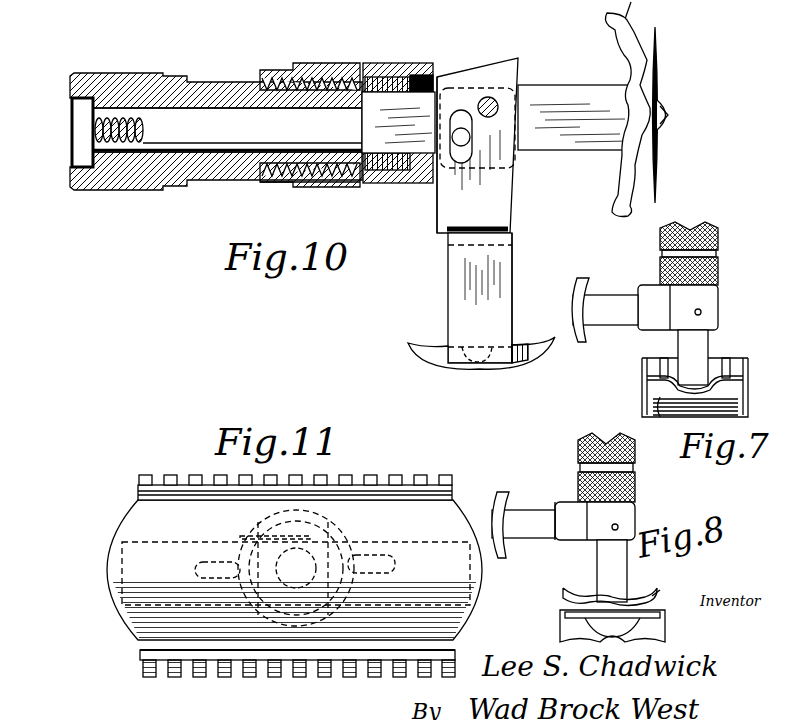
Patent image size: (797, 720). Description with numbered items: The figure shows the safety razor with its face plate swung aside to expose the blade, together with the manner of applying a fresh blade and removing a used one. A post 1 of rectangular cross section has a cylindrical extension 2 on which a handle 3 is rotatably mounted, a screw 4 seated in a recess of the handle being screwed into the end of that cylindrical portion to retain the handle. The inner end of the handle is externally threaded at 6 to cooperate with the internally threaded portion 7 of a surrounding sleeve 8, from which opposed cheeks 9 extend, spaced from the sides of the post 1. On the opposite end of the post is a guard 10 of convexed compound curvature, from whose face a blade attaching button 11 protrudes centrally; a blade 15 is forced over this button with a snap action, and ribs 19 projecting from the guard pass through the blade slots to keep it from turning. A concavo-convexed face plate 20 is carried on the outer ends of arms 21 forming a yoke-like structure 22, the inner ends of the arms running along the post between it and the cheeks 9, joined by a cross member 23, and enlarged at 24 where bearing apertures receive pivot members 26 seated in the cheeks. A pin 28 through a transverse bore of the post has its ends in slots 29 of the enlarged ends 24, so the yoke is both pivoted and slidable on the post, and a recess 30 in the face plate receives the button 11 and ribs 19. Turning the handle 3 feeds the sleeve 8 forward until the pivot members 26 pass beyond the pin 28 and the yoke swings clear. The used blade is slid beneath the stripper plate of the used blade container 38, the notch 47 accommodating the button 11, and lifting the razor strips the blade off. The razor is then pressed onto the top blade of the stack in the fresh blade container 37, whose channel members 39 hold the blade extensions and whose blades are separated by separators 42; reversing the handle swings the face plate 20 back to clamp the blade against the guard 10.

In FIG. 10, the post 1 is at (548, 100).
In FIG. 7, the post 1 is at (708, 337).
In FIG. 8, the post 1 is at (597, 570).
In FIG. 11, the post 1 is at (230, 528).
In FIG. 10, the cylindrical extension 2 is at (219, 110).
In FIG. 10, the handle 3 is at (163, 80).
In FIG. 10, the screw 4 is at (72, 108).
In FIG. 10, the external thread 6 is at (322, 78).
In FIG. 10, the internally threaded portion 7 is at (385, 68).
In FIG. 10, the sleeve 8 is at (322, 184).
In FIG. 7, the sleeve 8 is at (718, 260).
In FIG. 8, the sleeve 8 is at (635, 447).
In FIG. 10, the cheeks 9 is at (442, 80).
In FIG. 7, the cheeks 9 is at (718, 300).
In FIG. 8, the cheeks 9 is at (625, 514).
In FIG. 7, the guard 10 is at (662, 364).
In FIG. 8, the guard 10 is at (655, 600).
In FIG. 11, the guard 10 is at (270, 672).
In FIG. 10, the blade attaching button 11 is at (668, 125).
In FIG. 11, the blade attaching button 11 is at (330, 532).
In FIG. 10, the blade 15 is at (657, 50).
In FIG. 7, the blade 15 is at (740, 410).
In FIG. 8, the blade 15 is at (565, 614).
In FIG. 11, the blade 15 is at (192, 660).
In FIG. 10, the ribs 19 is at (665, 112).
In FIG. 11, the ribs 19 is at (195, 572).
In FIG. 10, the face plate 20 is at (438, 353).
In FIG. 7, the face plate 20 is at (573, 296).
In FIG. 8, the face plate 20 is at (500, 498).
In FIG. 11, the face plate 20 is at (381, 612).
In FIG. 10, the arms 21 is at (500, 277).
In FIG. 7, the arms 21 is at (618, 298).
In FIG. 8, the arms 21 is at (526, 516).
In FIG. 10, the yoke-like structure 22 is at (458, 260).
In FIG. 8, the yoke-like structure 22 is at (580, 530).
In FIG. 11, the yoke-like structure 22 is at (195, 541).
In FIG. 10, the cross member 23 is at (437, 212).
In FIG. 10, the enlarged inner ends 24 is at (512, 68).
In FIG. 11, the enlarged inner ends 24 is at (352, 533).
In FIG. 10, the pivot members 26 is at (488, 97).
In FIG. 10, the pin 28 is at (470, 137).
In FIG. 10, the slots 29 is at (461, 110).
In FIG. 10, the recess 30 is at (475, 345).
In FIG. 7, the fresh blade container 37 is at (746, 365).
In FIG. 8, the used blade container 38 is at (562, 633).
In FIG. 7, the channel members 39 is at (720, 370).
In FIG. 7, the separators 42 is at (655, 413).
In FIG. 8, the notch 47 is at (645, 598).